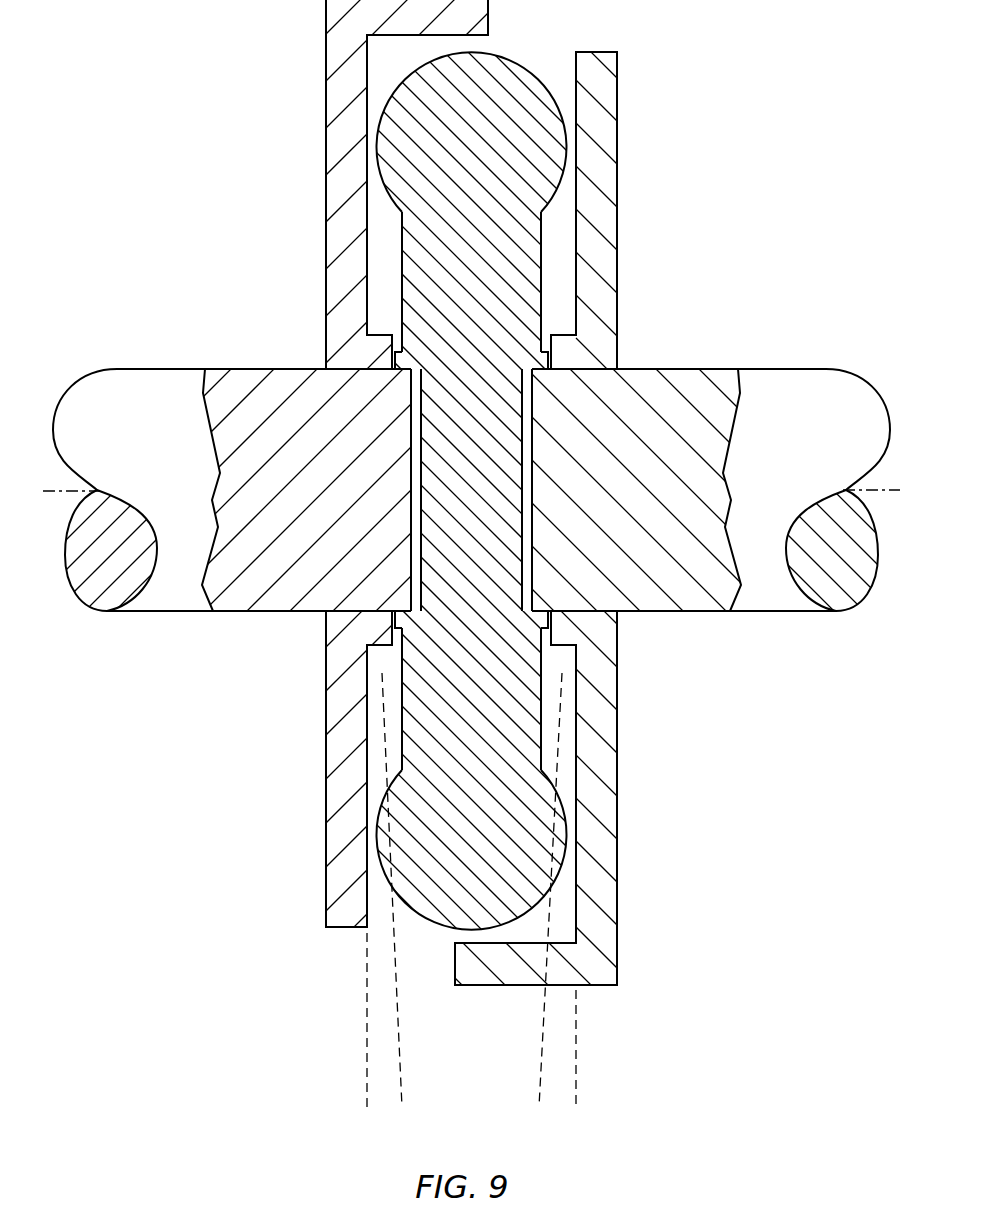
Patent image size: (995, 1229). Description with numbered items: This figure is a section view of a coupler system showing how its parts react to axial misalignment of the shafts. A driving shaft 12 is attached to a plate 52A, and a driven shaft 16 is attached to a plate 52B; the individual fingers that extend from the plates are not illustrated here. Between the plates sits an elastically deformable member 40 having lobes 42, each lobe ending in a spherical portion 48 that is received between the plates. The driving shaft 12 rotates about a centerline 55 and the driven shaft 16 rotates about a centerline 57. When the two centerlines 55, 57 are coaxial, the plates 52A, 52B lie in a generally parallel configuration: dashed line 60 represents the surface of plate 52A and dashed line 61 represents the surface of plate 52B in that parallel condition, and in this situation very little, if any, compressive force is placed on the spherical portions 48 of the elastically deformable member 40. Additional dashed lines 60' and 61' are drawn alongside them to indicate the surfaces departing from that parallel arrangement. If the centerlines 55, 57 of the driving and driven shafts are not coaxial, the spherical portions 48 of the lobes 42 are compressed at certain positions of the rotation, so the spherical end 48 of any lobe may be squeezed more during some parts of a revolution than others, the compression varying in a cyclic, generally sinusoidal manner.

The driving shaft 12 is at (800, 383).
The driven shaft 16 is at (142, 383).
The elastically deformable member 40 is at (486, 505).
The lobe 42 is at (537, 274).
The spherical portion 48 is at (512, 78).
The plate 52A is at (612, 131).
The plate 52B is at (333, 156).
The centerline 55 is at (886, 492).
The centerline 57 is at (54, 493).
The dashed line 60 is at (603, 1048).
The tilted axis 60' is at (516, 890).
The dashed line 61 is at (337, 1020).
The tilted axis 61' is at (421, 890).